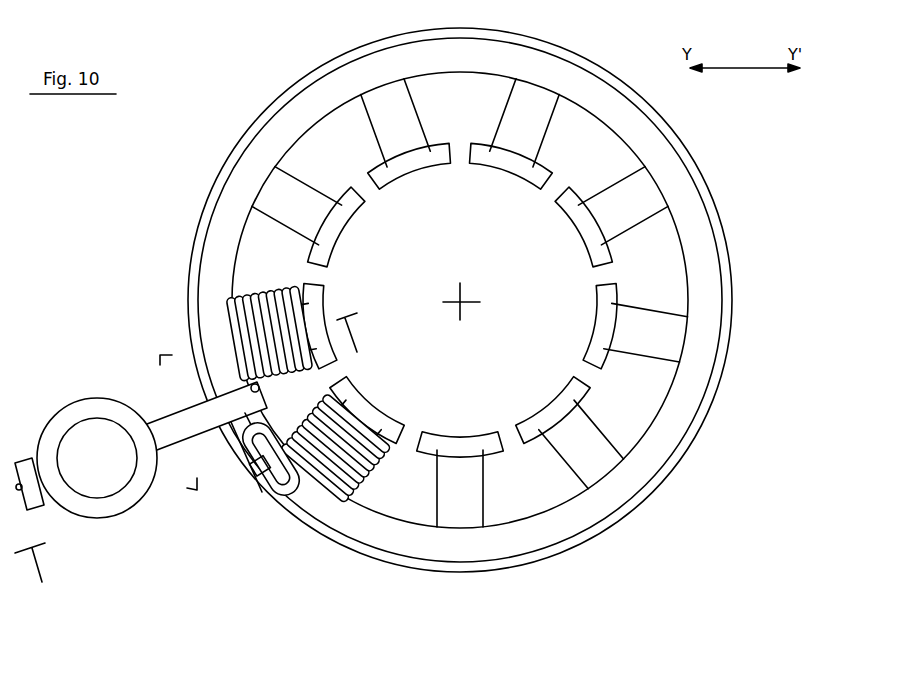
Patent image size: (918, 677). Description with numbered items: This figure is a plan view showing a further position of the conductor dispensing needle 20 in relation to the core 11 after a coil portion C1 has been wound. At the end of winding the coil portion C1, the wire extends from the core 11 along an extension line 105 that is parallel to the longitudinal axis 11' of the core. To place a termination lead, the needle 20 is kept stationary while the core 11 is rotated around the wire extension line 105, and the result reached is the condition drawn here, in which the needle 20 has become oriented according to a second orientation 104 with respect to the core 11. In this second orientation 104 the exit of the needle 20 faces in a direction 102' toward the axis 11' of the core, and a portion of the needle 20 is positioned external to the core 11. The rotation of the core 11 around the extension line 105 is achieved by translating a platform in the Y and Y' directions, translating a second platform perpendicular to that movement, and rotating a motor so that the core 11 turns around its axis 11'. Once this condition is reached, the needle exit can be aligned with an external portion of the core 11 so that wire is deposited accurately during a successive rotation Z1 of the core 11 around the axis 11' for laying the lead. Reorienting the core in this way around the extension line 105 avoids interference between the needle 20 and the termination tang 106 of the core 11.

The second orientation 104 is at (100, 262).
The needle 20 is at (163, 418).
The core 11 is at (209, 447).
The longitudinal axis 11' is at (491, 322).
The extension line 105 is at (335, 376).
The termination tang 106 is at (265, 492).
The coil portion C1 is at (276, 308).
The rotation Z1 is at (372, 278).
The direction 102' is at (161, 582).